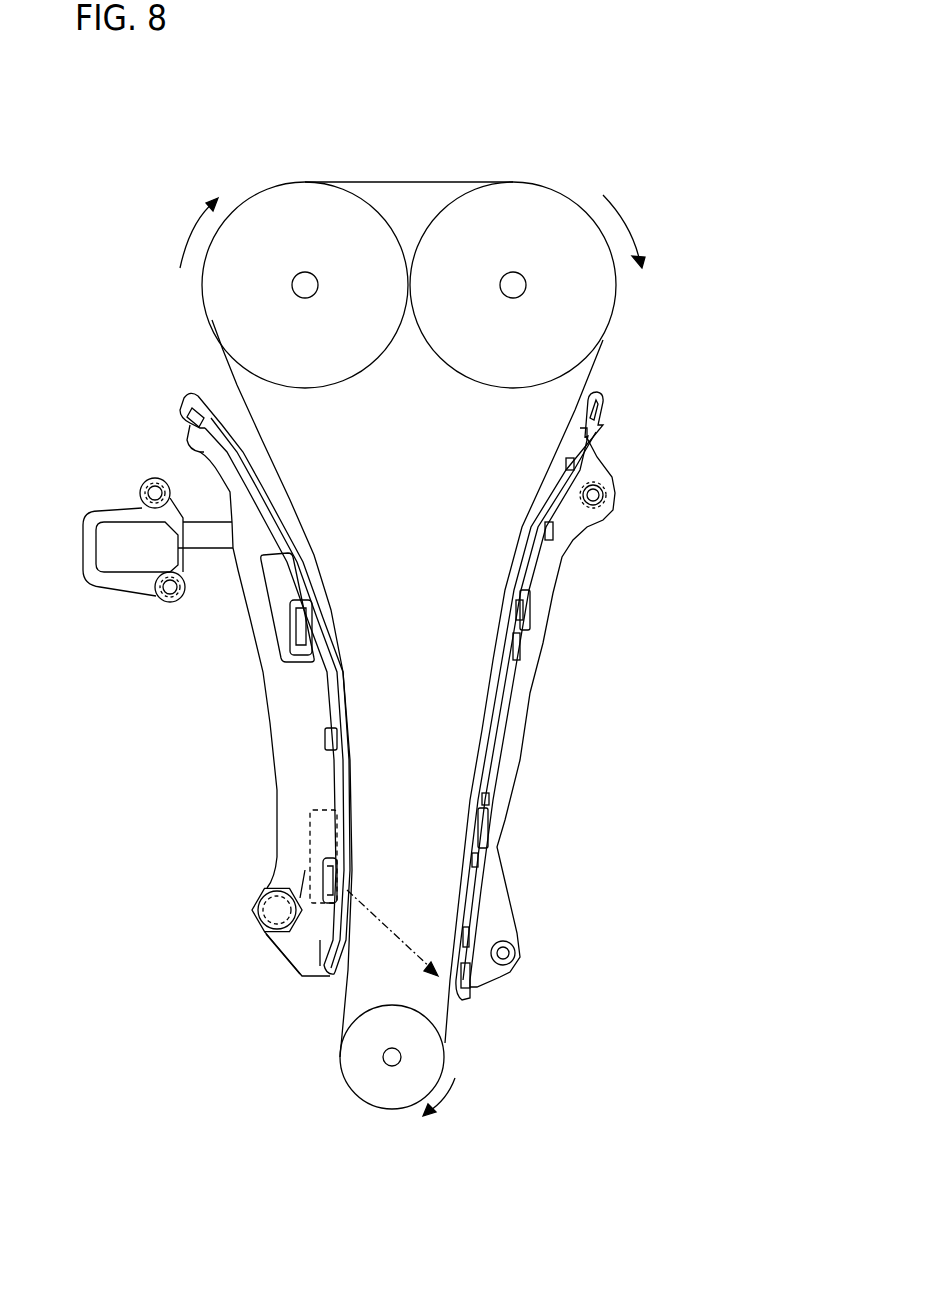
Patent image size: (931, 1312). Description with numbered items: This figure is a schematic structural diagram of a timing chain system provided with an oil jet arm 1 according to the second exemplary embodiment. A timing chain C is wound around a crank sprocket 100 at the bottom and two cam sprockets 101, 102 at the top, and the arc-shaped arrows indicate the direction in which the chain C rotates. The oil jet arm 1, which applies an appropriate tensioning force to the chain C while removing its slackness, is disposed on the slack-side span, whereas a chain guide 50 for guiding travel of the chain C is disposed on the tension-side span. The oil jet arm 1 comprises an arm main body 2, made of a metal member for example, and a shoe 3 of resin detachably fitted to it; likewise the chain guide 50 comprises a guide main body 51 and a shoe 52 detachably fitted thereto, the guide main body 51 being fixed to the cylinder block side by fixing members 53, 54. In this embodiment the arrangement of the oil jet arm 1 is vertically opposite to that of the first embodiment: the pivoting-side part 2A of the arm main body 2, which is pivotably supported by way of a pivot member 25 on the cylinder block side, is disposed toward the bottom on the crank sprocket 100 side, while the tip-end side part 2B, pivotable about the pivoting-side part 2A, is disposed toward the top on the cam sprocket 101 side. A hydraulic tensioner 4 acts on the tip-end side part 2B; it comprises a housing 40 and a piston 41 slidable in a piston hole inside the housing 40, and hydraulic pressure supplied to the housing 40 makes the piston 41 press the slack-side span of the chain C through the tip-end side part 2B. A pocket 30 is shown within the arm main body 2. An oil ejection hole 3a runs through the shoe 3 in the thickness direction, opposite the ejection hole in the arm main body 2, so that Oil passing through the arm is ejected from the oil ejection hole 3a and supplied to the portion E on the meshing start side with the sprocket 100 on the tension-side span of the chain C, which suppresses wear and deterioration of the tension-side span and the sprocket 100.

The oil jet arm 1 is at (224, 695).
The arm main body 2 is at (257, 732).
The pivoting-side part 2A is at (290, 948).
The tip-end side part 2B is at (212, 457).
The shoe 3 is at (273, 656).
The oil ejection hole 3a is at (342, 888).
The hydraulic tensioner 4 is at (132, 561).
The pivot member 25 is at (250, 907).
The tensioner pocket 30 is at (300, 558).
The housing 40 is at (87, 517).
The piston 41 is at (220, 542).
The chain guide 50 is at (572, 677).
The guide main body 51 is at (568, 551).
The shoe 52 is at (593, 393).
The fixing member 53 is at (603, 493).
The fixing member 54 is at (512, 953).
The crank sprocket 100 is at (360, 1093).
The cam sprocket 101 is at (300, 193).
The cam sprocket 102 is at (522, 193).
The timing chain C is at (413, 181).
The portion on the meshing start side E is at (458, 1023).
The oil Oil is at (392, 933).